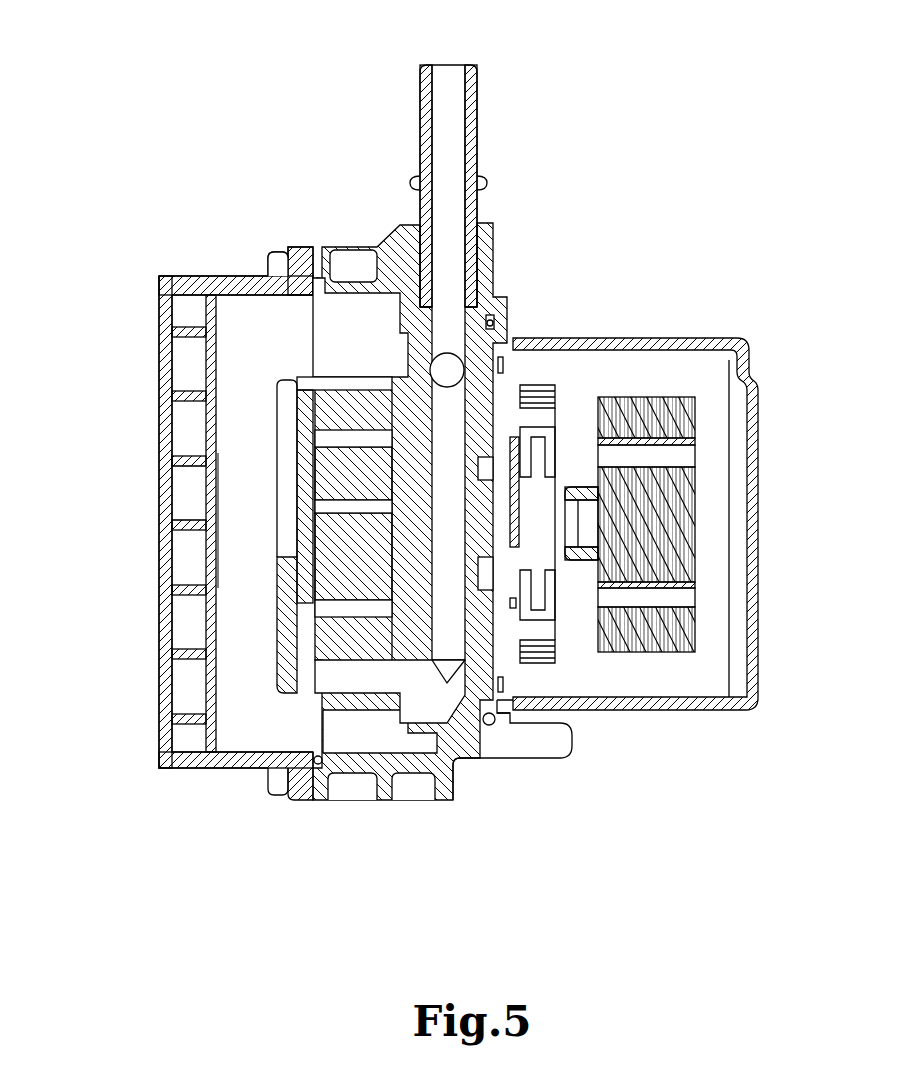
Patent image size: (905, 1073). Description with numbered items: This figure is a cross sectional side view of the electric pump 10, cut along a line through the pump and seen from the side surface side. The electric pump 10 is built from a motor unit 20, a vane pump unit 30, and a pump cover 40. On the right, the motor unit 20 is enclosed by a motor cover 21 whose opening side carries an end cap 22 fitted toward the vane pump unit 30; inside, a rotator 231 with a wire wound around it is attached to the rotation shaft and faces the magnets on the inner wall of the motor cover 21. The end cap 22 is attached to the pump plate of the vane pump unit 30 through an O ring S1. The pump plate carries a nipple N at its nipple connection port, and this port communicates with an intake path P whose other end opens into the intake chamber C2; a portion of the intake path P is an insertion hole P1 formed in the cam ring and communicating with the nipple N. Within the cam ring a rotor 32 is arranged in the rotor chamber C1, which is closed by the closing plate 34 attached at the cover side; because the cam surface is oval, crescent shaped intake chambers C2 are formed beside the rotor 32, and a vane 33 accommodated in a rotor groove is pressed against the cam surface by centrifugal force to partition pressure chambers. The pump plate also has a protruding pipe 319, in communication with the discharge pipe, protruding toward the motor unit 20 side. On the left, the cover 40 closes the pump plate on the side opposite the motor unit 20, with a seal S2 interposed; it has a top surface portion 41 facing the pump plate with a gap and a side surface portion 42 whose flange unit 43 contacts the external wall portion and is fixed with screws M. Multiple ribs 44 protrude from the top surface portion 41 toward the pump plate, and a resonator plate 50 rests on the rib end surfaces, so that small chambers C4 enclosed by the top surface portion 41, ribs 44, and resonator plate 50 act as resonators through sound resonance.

The electric pump 10 is at (250, 156).
The motor unit 20 is at (632, 242).
The motor cover 21 is at (655, 712).
The end cap 22 is at (513, 346).
The rotator 231 is at (672, 397).
The vane pump unit 30 is at (384, 810).
The rotor 32 is at (335, 540).
The vane 33 is at (350, 500).
The closing plate 34 is at (283, 600).
The pump cover 40 is at (185, 787).
The top surface portion 41 is at (160, 462).
The side surface portion 42 is at (190, 276).
The flange unit 43 is at (305, 800).
The ribs 44 is at (190, 712).
The resonator plate 50 is at (212, 547).
The protruding pipe 319 is at (545, 760).
The nipple N is at (473, 122).
The screws M is at (265, 262).
The intake path P is at (445, 418).
The insertion hole P1 is at (397, 676).
The O ring S1 is at (318, 275).
The seal S2 is at (490, 728).
The rotor chamber C1 is at (345, 522).
The intake chamber C2 is at (345, 437).
The small chambers C4 is at (195, 491).